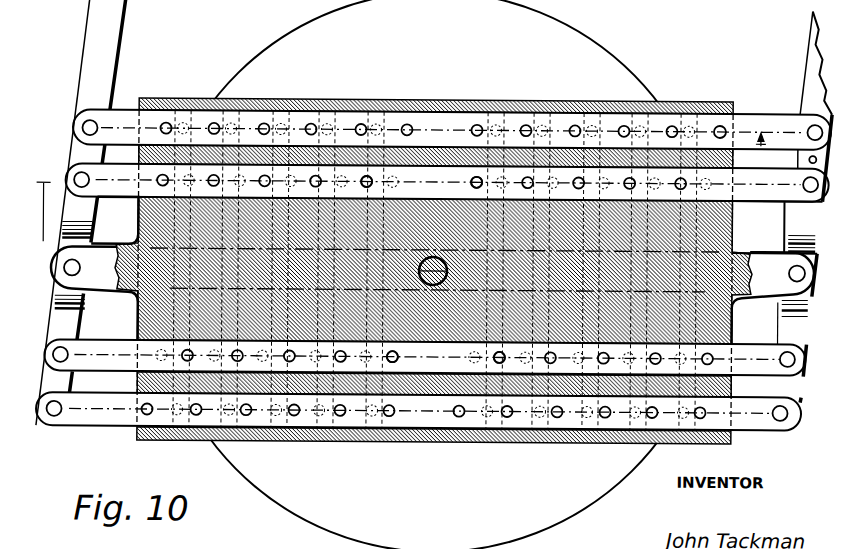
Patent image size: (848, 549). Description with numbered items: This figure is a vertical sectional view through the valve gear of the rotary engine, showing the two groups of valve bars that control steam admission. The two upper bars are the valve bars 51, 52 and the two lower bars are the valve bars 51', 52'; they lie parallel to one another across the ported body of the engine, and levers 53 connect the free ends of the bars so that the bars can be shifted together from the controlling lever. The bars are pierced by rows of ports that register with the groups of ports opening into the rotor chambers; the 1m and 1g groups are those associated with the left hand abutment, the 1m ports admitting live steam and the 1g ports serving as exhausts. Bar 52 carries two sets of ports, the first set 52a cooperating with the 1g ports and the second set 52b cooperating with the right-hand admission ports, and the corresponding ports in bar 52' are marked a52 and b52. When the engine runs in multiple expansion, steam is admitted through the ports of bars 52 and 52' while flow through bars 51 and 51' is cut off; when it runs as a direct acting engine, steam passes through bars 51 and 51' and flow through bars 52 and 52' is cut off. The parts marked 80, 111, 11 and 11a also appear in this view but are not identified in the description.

The valve bar 51 is at (452, 129).
The valve bar 52 is at (447, 182).
The valve bar 52' is at (424, 357).
The valve bar 51' is at (418, 411).
The lever 53 is at (107, 46).
The pivot hole 80 is at (718, 123).
The spacer block 111 is at (784, 158).
The plate dimension 11 is at (45, 211).
The plate lug 11a is at (36, 246).
The set of ports 52a is at (372, 190).
The set of ports 52b is at (472, 192).
The ports a52 is at (486, 372).
The ports b52 is at (414, 384).
The group of ports 1g is at (425, 270).
The group of ports 1m is at (440, 270).